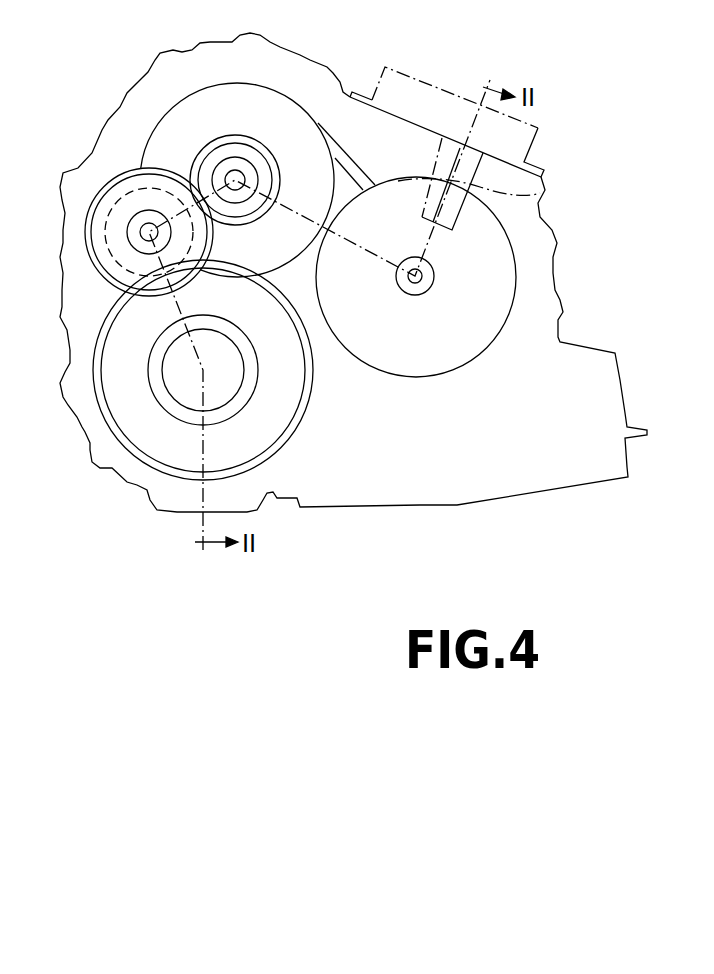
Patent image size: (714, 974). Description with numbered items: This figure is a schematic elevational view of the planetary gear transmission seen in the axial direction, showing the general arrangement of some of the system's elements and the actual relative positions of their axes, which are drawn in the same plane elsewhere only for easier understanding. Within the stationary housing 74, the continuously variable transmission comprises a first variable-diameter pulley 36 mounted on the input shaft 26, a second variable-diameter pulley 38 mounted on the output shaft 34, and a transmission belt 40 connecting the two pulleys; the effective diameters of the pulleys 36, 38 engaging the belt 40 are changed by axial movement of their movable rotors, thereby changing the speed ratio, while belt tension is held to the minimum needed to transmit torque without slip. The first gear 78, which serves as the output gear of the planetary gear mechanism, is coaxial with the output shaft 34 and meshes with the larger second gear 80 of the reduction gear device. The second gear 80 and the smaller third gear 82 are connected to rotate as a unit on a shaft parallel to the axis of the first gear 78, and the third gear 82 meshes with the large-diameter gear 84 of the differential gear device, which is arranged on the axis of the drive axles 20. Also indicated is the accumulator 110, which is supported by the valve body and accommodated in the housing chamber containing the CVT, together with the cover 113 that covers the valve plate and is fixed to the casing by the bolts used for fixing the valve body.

The drive axles 20 is at (247, 387).
The input shaft 26 is at (420, 296).
The output shaft 34 is at (246, 177).
The first variable-diameter pulley 36 is at (530, 268).
The second variable-diameter pulley 38 is at (197, 68).
The transmission belt 40 is at (345, 150).
The housing 74 is at (123, 107).
The first gear 78 is at (240, 172).
The second gear 80 is at (103, 188).
The third gear 82 is at (140, 231).
The large-diameter gear 84 is at (103, 327).
The accumulator 110 is at (545, 193).
The cover 113 is at (442, 88).